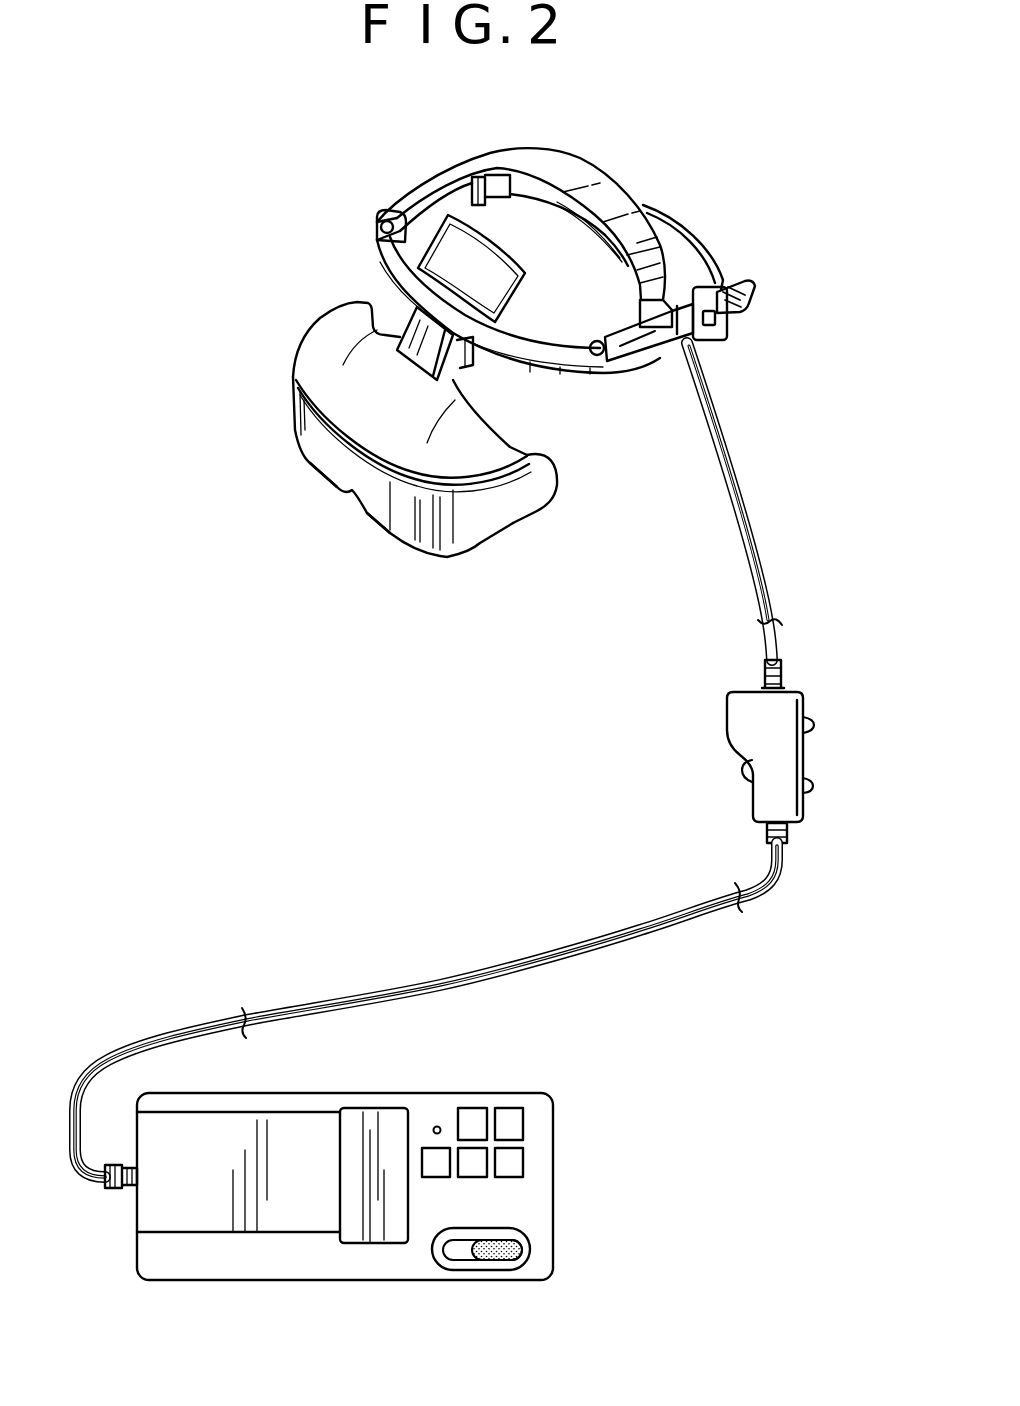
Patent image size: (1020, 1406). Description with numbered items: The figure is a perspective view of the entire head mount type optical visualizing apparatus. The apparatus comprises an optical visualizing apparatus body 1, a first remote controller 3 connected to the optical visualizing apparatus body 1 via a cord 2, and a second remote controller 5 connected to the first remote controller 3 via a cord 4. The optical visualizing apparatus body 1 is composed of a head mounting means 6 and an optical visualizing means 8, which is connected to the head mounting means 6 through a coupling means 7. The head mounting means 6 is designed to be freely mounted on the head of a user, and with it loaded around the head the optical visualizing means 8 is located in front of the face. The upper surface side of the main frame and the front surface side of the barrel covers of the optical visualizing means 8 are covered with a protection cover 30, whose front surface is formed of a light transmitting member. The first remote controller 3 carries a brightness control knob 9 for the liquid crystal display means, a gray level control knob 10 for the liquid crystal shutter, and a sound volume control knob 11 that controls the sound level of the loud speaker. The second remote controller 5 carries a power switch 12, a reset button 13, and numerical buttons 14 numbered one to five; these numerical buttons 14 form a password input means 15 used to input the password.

The optical visualizing apparatus body 1 is at (285, 184).
The cord 2 is at (722, 472).
The first remote controller 3 is at (718, 692).
The cord 4 is at (486, 970).
The second remote controller 5 is at (314, 1085).
The head mounting means 6 is at (365, 220).
The coupling means 7 is at (458, 360).
The optical visualizing means 8 is at (330, 298).
The brightness control knob 9 is at (743, 770).
The gray level control knob 10 is at (816, 727).
The sound volume control knob 11 is at (813, 791).
The power switch 12 is at (522, 1248).
The reset button 13 is at (428, 1128).
The numerical buttons 14 is at (507, 1107).
The password input means 15 is at (540, 1137).
The protection cover 30 is at (333, 468).